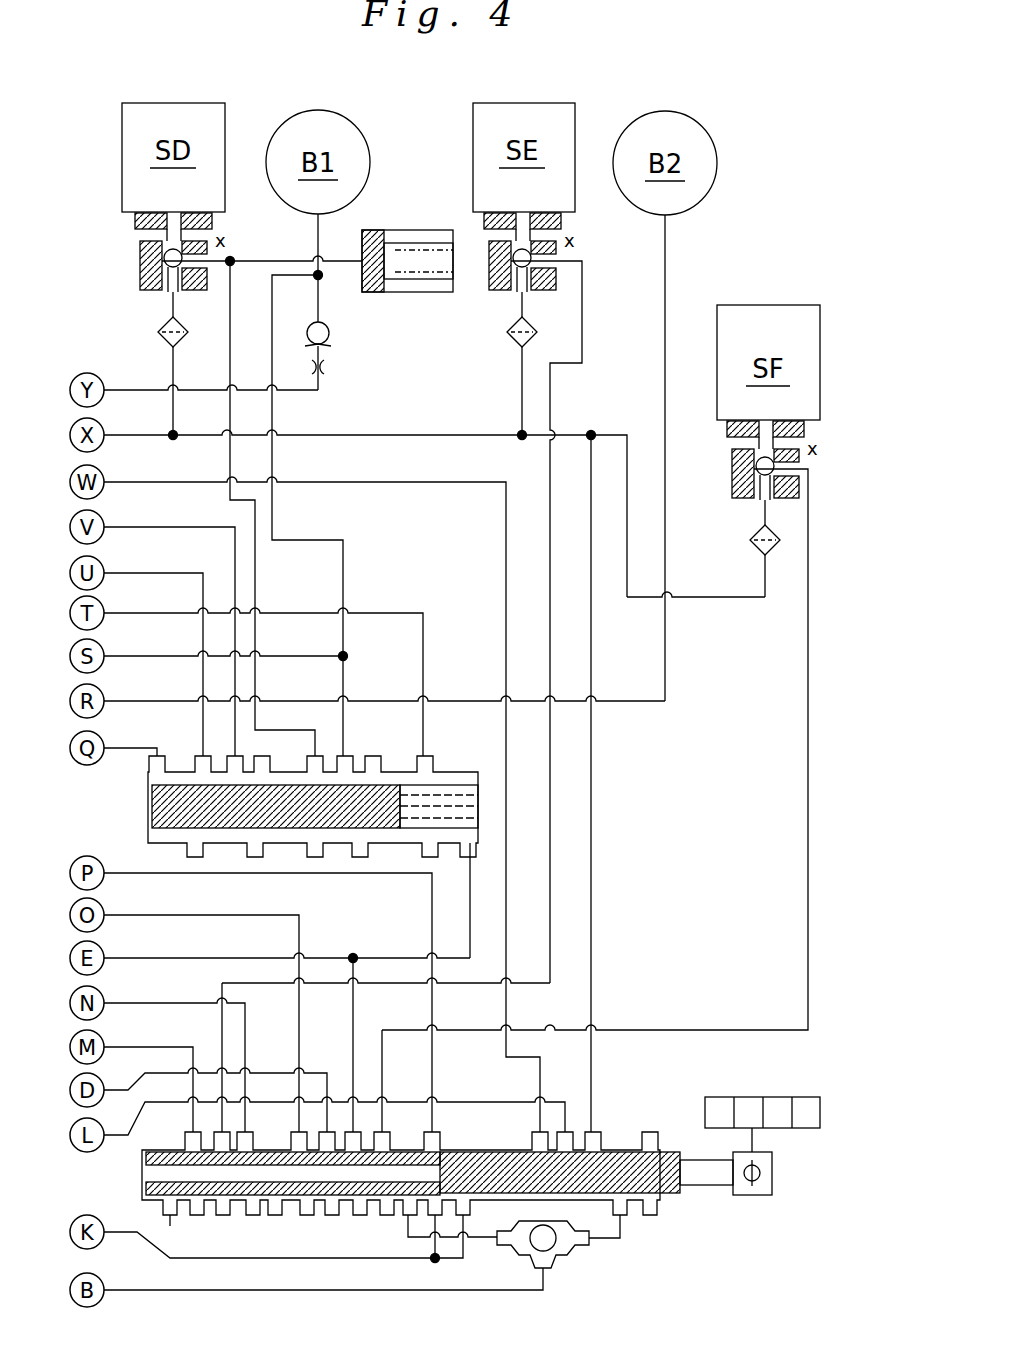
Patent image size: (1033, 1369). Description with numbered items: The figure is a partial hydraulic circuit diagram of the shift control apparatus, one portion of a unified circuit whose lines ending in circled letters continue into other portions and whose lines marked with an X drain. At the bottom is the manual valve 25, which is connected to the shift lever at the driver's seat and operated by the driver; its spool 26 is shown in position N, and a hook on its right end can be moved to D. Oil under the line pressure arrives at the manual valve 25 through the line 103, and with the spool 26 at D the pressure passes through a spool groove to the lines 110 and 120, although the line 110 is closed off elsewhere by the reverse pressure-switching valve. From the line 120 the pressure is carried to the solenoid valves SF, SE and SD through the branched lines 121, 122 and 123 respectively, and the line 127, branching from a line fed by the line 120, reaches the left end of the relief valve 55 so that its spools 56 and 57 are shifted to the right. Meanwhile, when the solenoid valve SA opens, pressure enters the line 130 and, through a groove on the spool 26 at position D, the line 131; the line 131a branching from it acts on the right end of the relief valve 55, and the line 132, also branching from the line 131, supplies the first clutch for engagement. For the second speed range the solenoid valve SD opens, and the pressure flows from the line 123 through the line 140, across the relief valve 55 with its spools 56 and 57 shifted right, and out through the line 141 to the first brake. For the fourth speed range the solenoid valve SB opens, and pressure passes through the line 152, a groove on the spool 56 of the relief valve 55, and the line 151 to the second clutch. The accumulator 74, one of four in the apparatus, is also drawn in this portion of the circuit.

The accumulator 74 is at (401, 230).
The line 123 is at (172, 380).
The line 122 is at (518, 382).
The line 120 is at (358, 434).
The line 103 is at (331, 484).
The line 151 is at (136, 527).
The line 152 is at (136, 572).
The line 140 is at (259, 588).
The line 141 is at (344, 562).
The line 121 is at (715, 600).
The line 127 is at (124, 748).
The relief valve 55 is at (274, 808).
The spool 56 is at (234, 842).
The spool 57 is at (378, 842).
The line 132 is at (171, 958).
The line 131a is at (385, 956).
The line 131 is at (357, 1008).
The line 130 is at (270, 1072).
The line 110 is at (469, 1098).
The spool 26 is at (617, 1132).
The manual valve 25 is at (481, 1182).